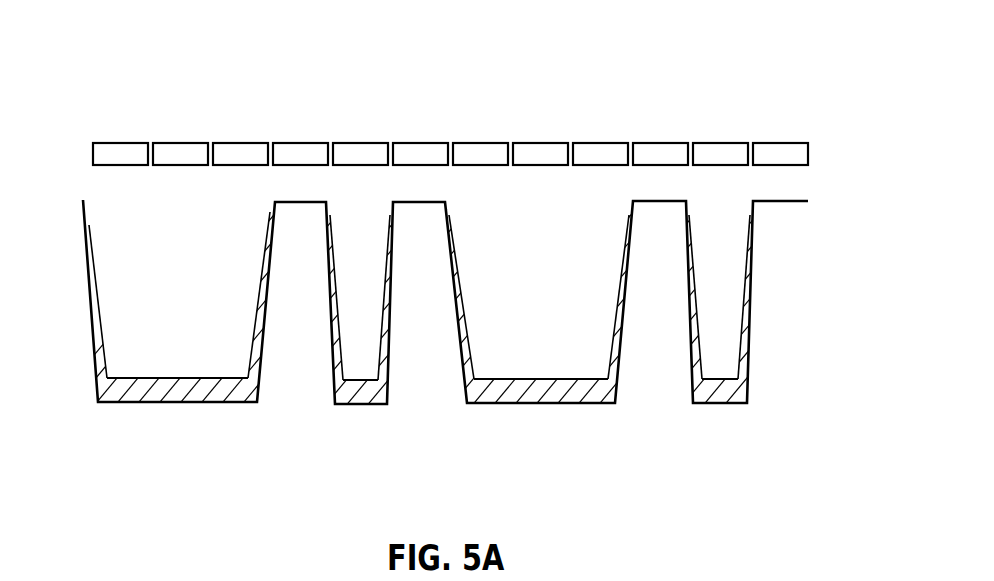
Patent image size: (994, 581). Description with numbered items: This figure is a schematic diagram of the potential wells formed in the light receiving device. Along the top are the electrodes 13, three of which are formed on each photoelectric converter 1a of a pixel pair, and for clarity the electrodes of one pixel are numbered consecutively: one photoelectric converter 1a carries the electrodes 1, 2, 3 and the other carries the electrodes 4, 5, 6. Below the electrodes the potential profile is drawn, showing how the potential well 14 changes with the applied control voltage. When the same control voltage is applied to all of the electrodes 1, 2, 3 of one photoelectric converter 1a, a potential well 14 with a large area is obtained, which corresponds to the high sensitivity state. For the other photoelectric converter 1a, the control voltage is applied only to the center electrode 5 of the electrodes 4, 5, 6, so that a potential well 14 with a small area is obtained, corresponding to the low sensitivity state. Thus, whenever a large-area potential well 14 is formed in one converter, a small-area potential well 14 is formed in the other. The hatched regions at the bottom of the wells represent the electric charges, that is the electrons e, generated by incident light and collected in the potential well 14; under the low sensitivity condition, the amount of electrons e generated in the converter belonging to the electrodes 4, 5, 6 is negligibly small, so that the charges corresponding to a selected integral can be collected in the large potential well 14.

The photoelectric converter 1a is at (255, 80).
The electrode 1 is at (300, 128).
The electrode 2 is at (360, 128).
The electrode 3 is at (420, 128).
The electrode 4 is at (480, 128).
The center electrode 5 is at (540, 128).
The electrode 6 is at (600, 128).
The electrodes 13 is at (450, 189).
The potential well 14 is at (92, 317).
The electrons e is at (193, 387).